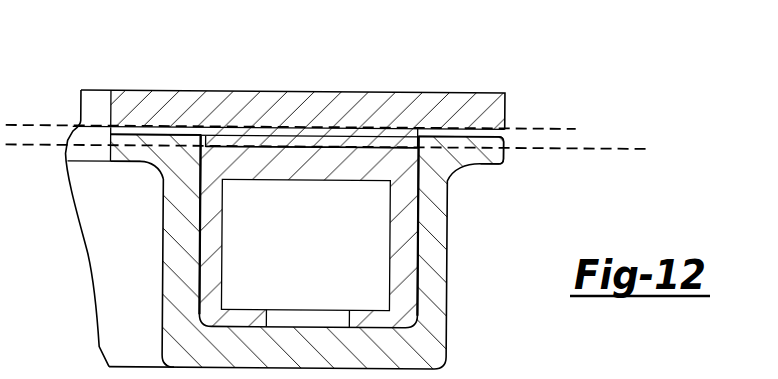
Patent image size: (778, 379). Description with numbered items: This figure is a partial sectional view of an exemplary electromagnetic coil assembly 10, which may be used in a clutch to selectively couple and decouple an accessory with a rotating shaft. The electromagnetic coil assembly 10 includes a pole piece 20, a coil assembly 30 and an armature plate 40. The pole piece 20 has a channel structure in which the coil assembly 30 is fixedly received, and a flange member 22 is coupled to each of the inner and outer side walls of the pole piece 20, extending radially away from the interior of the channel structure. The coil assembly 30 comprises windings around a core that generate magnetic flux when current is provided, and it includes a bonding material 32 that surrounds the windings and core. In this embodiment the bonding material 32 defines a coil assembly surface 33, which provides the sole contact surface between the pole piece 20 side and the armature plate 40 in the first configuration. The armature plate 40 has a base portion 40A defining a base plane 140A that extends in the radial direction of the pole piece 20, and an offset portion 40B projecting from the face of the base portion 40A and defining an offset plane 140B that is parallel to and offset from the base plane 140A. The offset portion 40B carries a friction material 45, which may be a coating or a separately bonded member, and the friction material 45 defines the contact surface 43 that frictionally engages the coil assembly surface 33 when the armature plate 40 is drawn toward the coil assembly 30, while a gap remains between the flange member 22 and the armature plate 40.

The electromagnetic coil assembly 10 is at (348, 190).
The pole piece 20 is at (435, 336).
The flange member 22 is at (133, 152).
The coil assembly 30 is at (308, 255).
The bonding material 32 is at (405, 233).
The coil assembly surface 33 is at (314, 138).
The armature plate 40 is at (328, 86).
The base portion 40A is at (473, 103).
The offset portion 40B is at (405, 143).
The contact surface 43 is at (232, 153).
The friction material 45 is at (250, 142).
The base plane 140A is at (317, 130).
The offset plane 140B is at (348, 152).